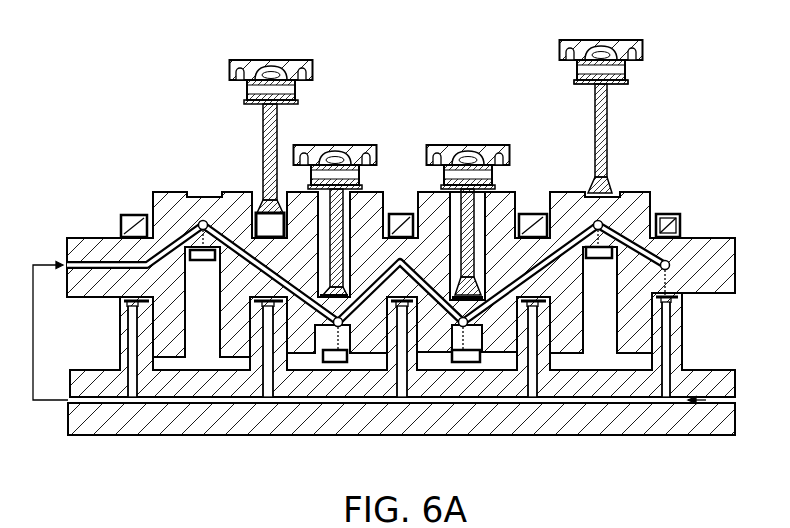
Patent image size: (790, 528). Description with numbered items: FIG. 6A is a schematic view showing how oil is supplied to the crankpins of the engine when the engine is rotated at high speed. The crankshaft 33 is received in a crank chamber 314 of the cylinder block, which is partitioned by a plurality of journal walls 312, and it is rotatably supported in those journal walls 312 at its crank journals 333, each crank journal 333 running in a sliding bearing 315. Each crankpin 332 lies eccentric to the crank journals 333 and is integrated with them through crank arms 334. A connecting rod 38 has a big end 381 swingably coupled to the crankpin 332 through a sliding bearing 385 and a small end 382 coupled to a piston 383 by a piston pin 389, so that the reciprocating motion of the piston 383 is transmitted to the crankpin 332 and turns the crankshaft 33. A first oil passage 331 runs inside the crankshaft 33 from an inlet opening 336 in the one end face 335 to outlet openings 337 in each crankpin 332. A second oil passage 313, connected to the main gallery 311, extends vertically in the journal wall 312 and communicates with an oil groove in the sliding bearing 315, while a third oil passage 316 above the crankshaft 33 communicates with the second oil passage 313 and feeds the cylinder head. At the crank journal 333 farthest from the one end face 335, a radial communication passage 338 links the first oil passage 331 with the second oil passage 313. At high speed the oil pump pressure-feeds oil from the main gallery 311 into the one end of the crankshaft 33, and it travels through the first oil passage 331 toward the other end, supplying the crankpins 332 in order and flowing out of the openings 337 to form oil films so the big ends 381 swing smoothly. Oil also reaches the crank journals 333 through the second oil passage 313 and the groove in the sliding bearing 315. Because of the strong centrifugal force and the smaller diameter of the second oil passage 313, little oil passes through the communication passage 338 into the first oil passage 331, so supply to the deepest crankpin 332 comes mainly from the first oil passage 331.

The crankshaft 33 is at (381, 241).
The connecting rod 38 is at (610, 103).
The big end 381 is at (594, 153).
The small end 382 is at (582, 86).
The piston 383 is at (604, 41).
The sliding bearing 385 is at (609, 178).
The piston pin 389 is at (626, 72).
The main gallery 311 is at (627, 400).
The journal wall 312 is at (679, 334).
The second oil passage 313 is at (676, 370).
The crank chamber 314 is at (597, 357).
The sliding bearing 315 is at (657, 213).
The third oil passage 316 is at (685, 216).
The first oil passage 331 is at (623, 242).
The crankpin 332 is at (608, 200).
The crank journal 333 is at (688, 241).
The crank arm 334 is at (503, 192).
The one end face 335 is at (69, 248).
The opening 336 is at (63, 265).
The opening 337 is at (199, 226).
The communication passage 338 is at (672, 272).